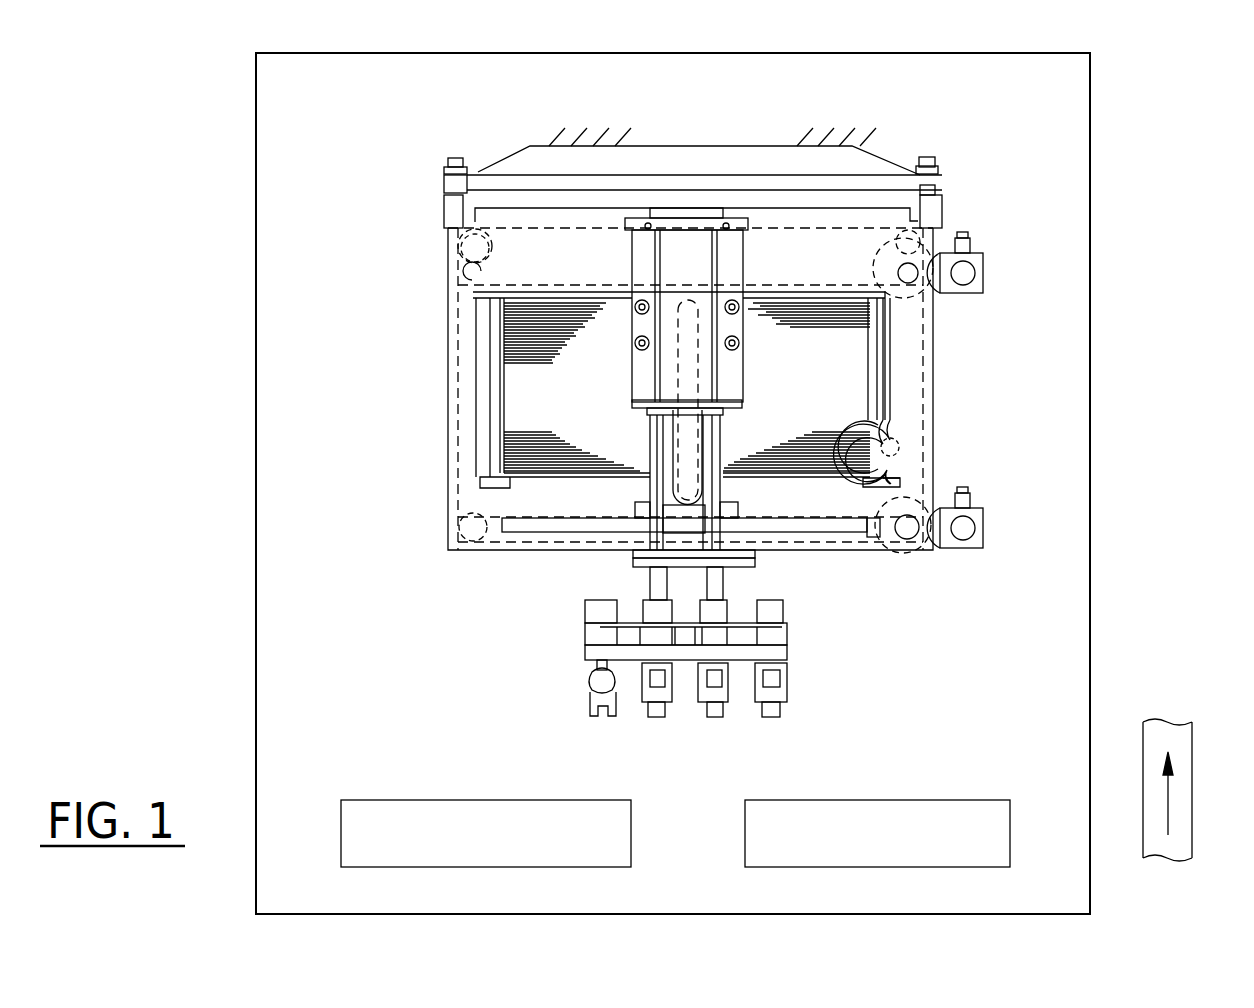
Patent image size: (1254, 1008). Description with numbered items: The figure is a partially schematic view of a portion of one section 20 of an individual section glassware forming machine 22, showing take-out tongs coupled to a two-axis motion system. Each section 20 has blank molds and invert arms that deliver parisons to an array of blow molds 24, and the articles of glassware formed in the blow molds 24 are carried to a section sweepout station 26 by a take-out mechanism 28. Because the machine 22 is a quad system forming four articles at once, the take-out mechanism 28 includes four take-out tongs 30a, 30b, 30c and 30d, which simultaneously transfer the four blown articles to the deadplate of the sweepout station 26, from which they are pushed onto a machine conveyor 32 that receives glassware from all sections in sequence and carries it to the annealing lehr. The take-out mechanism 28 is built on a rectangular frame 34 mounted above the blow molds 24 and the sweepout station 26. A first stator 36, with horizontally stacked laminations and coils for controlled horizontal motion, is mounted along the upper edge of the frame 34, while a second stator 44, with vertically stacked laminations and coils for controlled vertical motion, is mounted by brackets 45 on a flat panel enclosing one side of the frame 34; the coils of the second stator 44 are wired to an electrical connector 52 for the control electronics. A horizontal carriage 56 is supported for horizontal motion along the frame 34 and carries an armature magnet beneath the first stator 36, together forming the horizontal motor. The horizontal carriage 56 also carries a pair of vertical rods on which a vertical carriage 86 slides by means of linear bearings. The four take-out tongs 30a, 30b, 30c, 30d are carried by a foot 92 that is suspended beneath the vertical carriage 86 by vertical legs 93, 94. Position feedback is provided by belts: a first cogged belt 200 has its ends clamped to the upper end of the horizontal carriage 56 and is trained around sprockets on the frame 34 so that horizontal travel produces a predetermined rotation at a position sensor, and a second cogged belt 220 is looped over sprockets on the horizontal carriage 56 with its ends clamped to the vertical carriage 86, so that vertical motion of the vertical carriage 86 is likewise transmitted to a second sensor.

The section 20 is at (1046, 105).
The individual section glassware forming machine 22 is at (1096, 134).
The blow molds 24 is at (424, 800).
The sweepout station 26 is at (952, 800).
The take-out mechanism 28 is at (968, 333).
The take-out tong 30a is at (592, 688).
The take-out tong 30b is at (656, 718).
The take-out tong 30c is at (717, 718).
The take-out tong 30d is at (790, 690).
The machine conveyor 32 is at (1180, 742).
The rectangular frame 34 is at (947, 205).
The first stator 36 is at (858, 186).
The second stator 44 is at (520, 406).
The brackets 45 is at (890, 402).
The electrical connector 52 is at (912, 450).
The horizontal carriage 56 is at (746, 507).
The vertical carriage 86 is at (630, 262).
The foot 92 is at (781, 632).
The vertical leg 93 is at (652, 581).
The vertical leg 94 is at (722, 585).
The first cogged belt 200 is at (456, 262).
The second cogged belt 220 is at (706, 422).